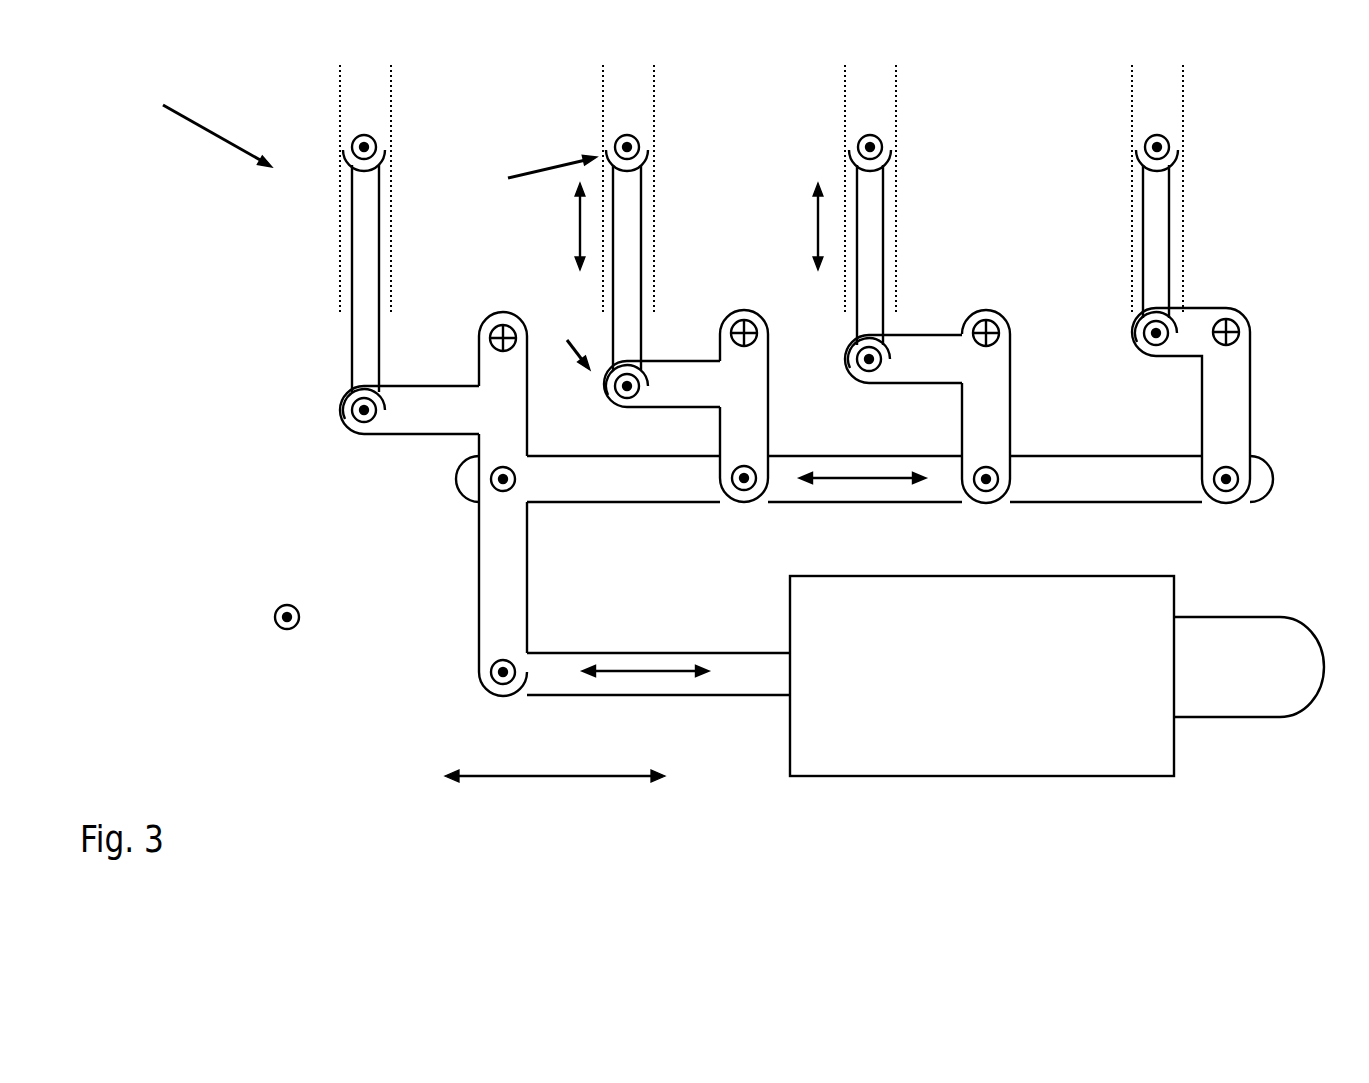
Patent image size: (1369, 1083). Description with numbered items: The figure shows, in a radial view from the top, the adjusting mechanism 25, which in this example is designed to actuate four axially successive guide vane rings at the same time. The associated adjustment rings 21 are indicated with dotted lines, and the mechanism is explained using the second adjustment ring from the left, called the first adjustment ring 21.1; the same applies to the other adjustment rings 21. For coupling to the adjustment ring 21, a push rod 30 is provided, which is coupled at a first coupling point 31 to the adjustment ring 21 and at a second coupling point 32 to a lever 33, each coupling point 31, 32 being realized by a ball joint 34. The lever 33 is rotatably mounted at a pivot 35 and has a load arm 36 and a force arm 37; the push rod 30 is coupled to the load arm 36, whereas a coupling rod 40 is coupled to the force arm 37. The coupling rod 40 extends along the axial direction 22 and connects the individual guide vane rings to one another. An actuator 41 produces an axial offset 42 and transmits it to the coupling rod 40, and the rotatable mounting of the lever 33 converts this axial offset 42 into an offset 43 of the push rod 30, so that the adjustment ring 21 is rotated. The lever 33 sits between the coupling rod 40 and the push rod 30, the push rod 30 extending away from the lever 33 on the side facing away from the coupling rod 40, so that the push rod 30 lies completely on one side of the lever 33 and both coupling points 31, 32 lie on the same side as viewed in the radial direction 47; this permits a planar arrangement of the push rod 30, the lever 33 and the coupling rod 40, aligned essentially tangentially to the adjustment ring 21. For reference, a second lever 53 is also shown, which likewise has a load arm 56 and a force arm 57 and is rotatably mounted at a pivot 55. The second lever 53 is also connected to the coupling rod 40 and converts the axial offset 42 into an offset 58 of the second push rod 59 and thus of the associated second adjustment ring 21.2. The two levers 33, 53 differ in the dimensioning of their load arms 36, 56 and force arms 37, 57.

The adjustment ring 21 is at (367, 108).
The first adjustment ring 21.1 is at (631, 108).
The second adjustment ring 21.2 is at (880, 110).
The axial direction 22 is at (568, 777).
The adjusting mechanism 25 is at (196, 124).
The push rod 30 is at (627, 248).
The first coupling point 31 is at (532, 176).
The second coupling point 32 is at (569, 339).
The lever 33 is at (755, 363).
The ball joint 34 is at (640, 140).
The pivot 35 is at (750, 315).
The load arm 36 is at (675, 373).
The force arm 37 is at (745, 435).
The coupling rod 40 is at (635, 488).
The actuator 41 is at (1070, 752).
The axial offset 42 is at (865, 480).
The offset 43 is at (577, 215).
The radial direction 47 is at (273, 628).
The second lever 53 is at (997, 367).
The pivot 55 is at (990, 308).
The load arm 56 is at (912, 355).
The force arm 57 is at (987, 438).
The offset 58 is at (817, 222).
The second push rod 59 is at (868, 225).